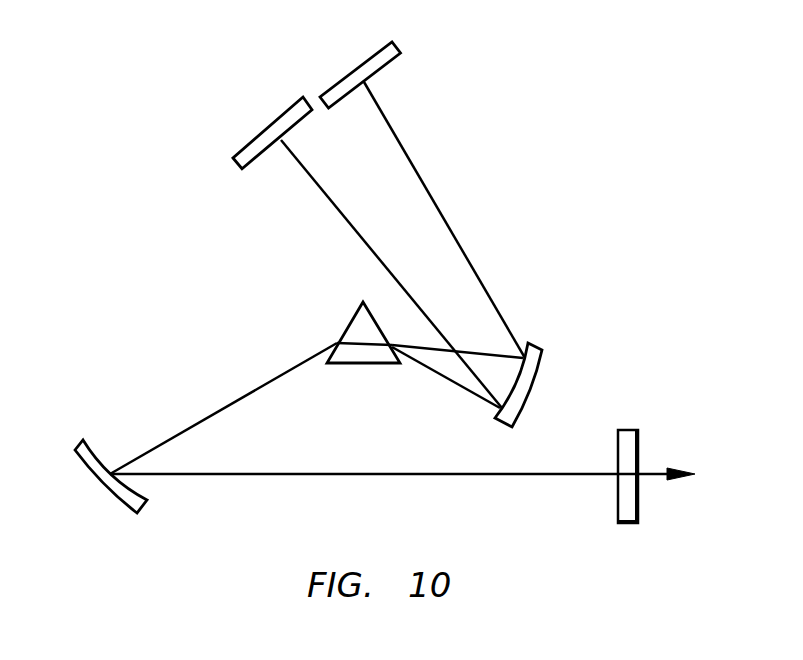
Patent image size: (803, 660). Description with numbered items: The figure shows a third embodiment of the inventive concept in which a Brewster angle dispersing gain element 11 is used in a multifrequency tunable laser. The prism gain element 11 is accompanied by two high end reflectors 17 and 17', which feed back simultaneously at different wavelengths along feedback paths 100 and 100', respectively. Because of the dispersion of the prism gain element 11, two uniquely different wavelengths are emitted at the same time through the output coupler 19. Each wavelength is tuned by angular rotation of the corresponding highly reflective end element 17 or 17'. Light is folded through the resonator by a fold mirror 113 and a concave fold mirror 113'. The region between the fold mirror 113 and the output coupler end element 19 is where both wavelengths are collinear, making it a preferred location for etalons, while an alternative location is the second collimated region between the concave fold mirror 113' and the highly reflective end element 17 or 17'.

The high end reflector 17 is at (360, 59).
The high end reflector 17' is at (272, 122).
The feedback path 100 is at (444, 220).
The feedback path 100' is at (385, 274).
The Brewster angle dispersing gain element 11 is at (355, 315).
The fold mirror 113 is at (94, 456).
The concave fold mirror 113' is at (537, 362).
The output coupler 19 is at (638, 438).